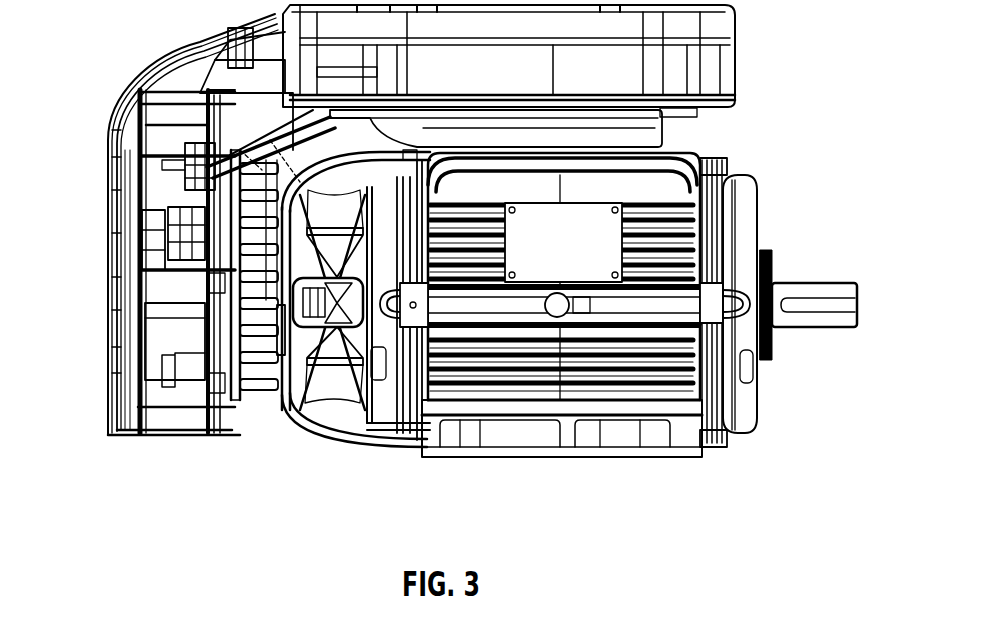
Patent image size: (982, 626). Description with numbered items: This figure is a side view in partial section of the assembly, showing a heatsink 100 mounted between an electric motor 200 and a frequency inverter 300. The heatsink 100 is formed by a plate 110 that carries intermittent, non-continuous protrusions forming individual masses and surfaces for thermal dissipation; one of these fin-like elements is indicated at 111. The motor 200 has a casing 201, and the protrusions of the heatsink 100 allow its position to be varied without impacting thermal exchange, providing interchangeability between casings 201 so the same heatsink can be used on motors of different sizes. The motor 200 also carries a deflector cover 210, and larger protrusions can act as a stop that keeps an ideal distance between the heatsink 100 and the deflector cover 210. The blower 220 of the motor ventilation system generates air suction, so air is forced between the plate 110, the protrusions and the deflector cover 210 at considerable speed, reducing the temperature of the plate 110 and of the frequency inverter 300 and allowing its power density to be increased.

The heatsink 100 is at (265, 412).
The plate 110 is at (225, 432).
The heat sink fin 111 is at (247, 400).
The electric motor 200 is at (753, 420).
The casing 201 is at (583, 457).
The deflector cover 210 is at (320, 427).
The blower 220 is at (340, 402).
The frequency inverter 300 is at (108, 428).